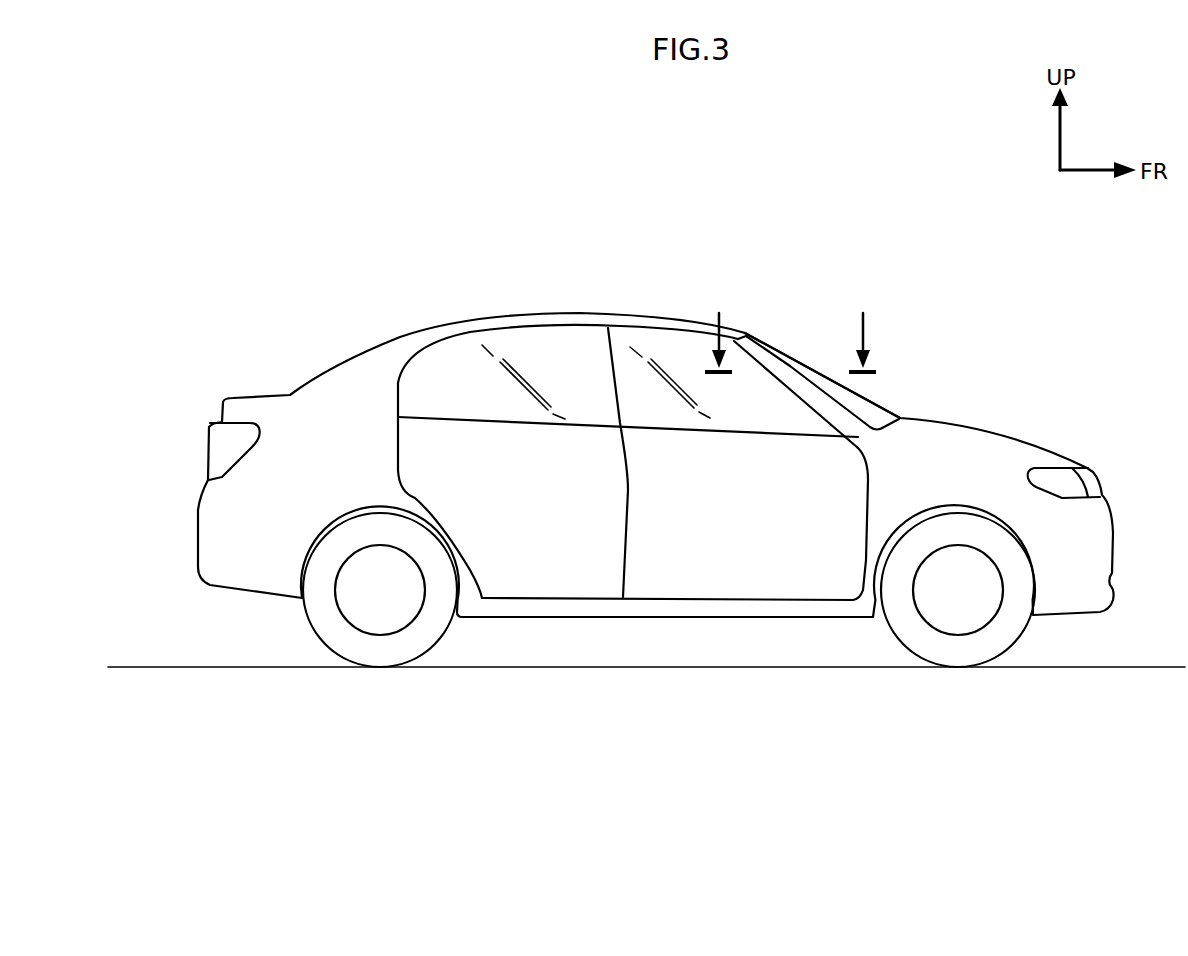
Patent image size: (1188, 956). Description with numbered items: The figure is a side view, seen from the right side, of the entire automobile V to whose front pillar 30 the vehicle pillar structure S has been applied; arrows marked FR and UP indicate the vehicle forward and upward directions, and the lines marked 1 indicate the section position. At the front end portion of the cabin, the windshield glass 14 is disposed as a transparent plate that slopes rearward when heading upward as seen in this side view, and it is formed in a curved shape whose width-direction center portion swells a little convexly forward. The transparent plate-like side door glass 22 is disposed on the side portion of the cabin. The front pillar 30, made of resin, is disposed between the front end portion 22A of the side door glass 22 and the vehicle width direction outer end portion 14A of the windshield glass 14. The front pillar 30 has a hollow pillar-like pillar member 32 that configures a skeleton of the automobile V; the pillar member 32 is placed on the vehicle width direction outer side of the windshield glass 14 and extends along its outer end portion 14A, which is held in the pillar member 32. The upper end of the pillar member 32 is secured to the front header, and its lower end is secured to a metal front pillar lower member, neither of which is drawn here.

The vehicle pillar structure (section position) 1 is at (790, 326).
The windshield glass 14 is at (793, 353).
The vehicle width direction outer end portions of the windshield glass 14A is at (802, 367).
The side door glass 22 is at (662, 345).
The front end portion of the side door glass 22A is at (803, 397).
The front pillar 30 is at (845, 401).
The pillar member 32 is at (821, 396).
The vehicle (automobile) V is at (508, 246).
The vehicle pillar structure S is at (830, 310).